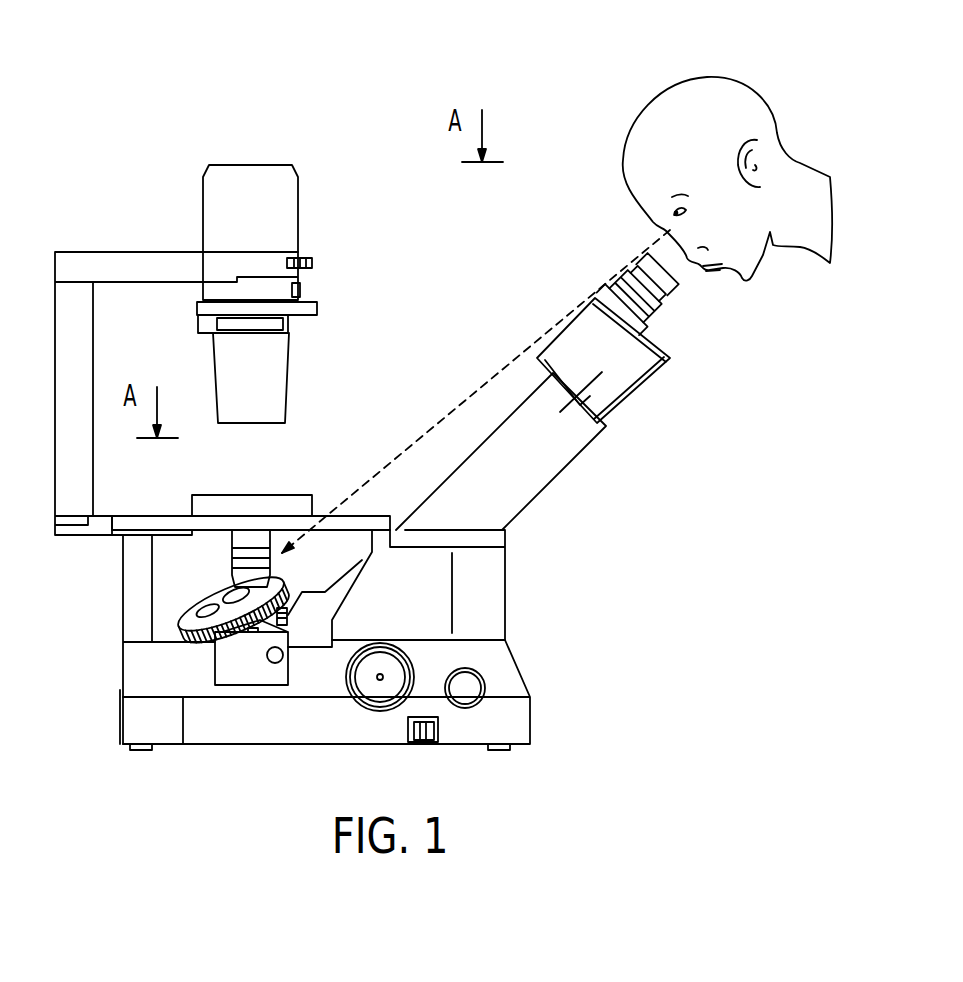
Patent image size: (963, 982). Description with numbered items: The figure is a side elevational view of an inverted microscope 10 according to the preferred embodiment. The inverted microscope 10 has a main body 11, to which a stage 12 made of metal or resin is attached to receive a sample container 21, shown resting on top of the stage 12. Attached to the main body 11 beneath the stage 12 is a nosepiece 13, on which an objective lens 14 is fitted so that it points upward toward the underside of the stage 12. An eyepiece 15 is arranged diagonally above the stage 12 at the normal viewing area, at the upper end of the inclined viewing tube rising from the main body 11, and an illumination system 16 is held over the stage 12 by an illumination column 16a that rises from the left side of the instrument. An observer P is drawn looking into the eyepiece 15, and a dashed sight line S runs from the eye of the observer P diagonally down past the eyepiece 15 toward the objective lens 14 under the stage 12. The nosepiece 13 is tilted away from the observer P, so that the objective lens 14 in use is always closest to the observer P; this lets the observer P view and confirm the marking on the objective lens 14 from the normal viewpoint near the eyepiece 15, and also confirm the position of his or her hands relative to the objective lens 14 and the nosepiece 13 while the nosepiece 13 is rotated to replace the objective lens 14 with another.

The inverted microscope 10 is at (327, 138).
The main body 11 is at (493, 590).
The stage 12 is at (147, 524).
The nosepiece 13 is at (185, 613).
The objective lens 14 is at (232, 556).
The eyepiece 15 is at (645, 310).
The illumination system 16 is at (270, 365).
The illumination column 16a is at (127, 262).
The sample container 21 is at (295, 505).
The observer P is at (713, 85).
The sight line S is at (495, 368).